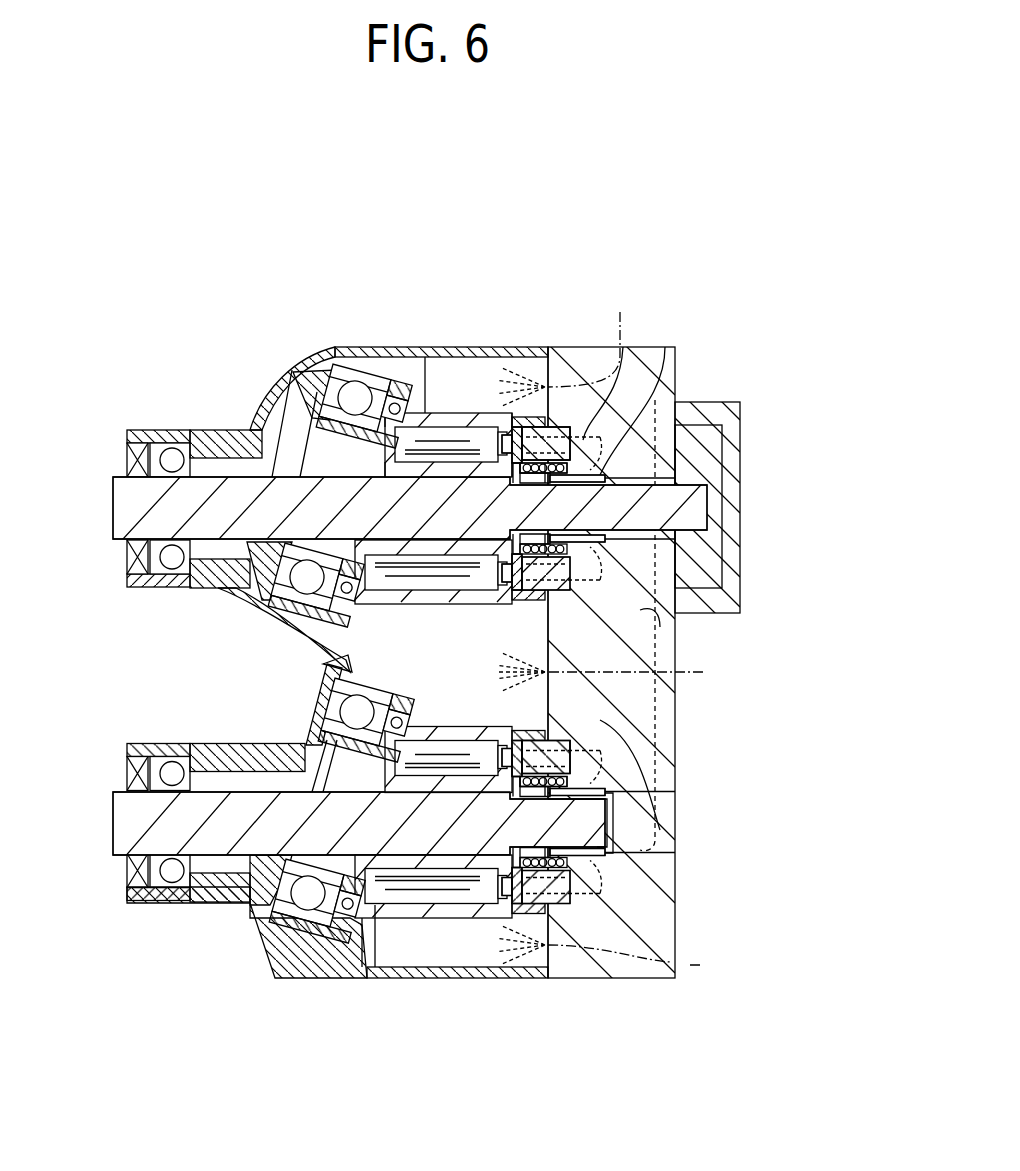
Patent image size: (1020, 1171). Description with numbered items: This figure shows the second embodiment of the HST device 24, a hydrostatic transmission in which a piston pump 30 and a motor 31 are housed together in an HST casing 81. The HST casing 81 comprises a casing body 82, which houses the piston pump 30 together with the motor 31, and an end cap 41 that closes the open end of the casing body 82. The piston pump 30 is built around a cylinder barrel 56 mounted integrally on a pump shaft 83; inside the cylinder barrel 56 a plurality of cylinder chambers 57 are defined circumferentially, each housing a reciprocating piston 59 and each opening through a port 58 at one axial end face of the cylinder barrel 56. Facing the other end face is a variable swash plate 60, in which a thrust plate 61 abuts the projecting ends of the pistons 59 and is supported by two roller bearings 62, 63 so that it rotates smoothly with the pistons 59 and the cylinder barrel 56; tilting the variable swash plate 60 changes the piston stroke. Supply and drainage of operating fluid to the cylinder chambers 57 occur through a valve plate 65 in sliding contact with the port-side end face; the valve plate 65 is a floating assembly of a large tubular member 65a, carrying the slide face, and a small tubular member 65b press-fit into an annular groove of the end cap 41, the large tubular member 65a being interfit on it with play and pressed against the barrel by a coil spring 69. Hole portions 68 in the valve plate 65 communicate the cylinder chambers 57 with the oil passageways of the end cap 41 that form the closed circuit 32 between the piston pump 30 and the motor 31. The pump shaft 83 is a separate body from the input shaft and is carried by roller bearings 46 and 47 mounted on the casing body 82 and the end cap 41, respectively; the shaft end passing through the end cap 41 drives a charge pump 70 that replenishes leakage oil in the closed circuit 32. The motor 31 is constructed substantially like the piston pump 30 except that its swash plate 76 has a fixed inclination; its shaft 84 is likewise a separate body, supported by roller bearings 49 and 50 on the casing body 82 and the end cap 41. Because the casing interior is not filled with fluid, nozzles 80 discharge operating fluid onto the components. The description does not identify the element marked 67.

The HST device 24 is at (133, 313).
The roller bearing 46 is at (175, 440).
The roller bearing 62 is at (300, 385).
The variable swash plate 60 is at (362, 348).
The roller bearing 63 is at (393, 367).
The cylinder barrel 56 is at (435, 365).
The piston pump 30 is at (444, 381).
The valve plate 65 is at (602, 303).
The large tubular member 65a is at (538, 420).
The small tubular member 65b is at (570, 420).
The nozzle 80 is at (644, 633).
The roller bearing 47 is at (665, 347).
The charge pump 70 is at (703, 422).
The coil spring 69 is at (675, 540).
The thrust plate 61 is at (365, 440).
The shaft 84 is at (230, 565).
The swash plate 76 is at (375, 683).
The piston 59 is at (430, 598).
The cylinder chamber 57 is at (470, 600).
The port 58 is at (503, 597).
The hole portion 68 is at (530, 600).
The oil passage 67 is at (655, 634).
The closed circuit 32 is at (757, 652).
The roller bearing 49 is at (160, 757).
The pump shaft 83 is at (217, 775).
The roller bearing 50 is at (607, 847).
The end cap 41 is at (627, 980).
The motor 31 is at (473, 949).
The casing body 82 is at (355, 988).
The HST casing 81 is at (315, 985).